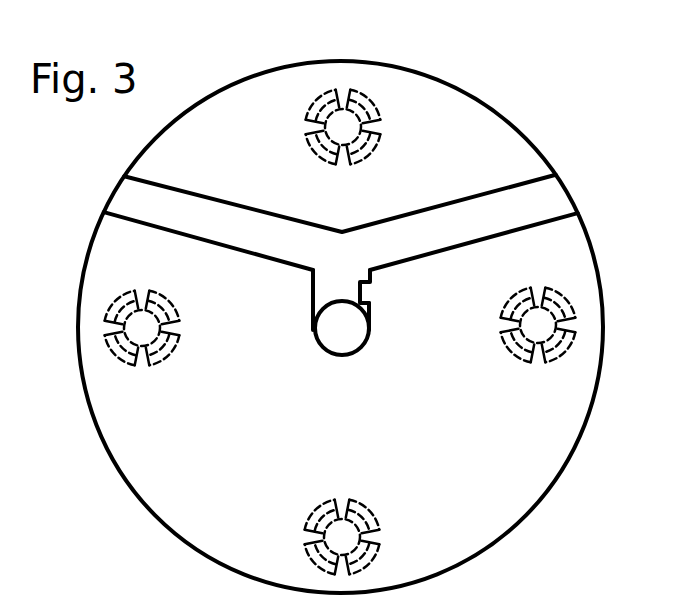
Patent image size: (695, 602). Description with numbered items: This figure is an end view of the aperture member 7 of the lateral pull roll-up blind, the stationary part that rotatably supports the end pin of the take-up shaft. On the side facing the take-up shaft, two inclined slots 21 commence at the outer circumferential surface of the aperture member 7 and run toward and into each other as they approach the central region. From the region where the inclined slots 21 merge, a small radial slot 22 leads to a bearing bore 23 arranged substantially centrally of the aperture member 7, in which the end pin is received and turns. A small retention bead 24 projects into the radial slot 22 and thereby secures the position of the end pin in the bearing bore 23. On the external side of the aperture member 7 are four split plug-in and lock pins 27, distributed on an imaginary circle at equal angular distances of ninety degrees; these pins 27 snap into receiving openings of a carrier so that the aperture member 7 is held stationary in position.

The aperture member 7 is at (563, 423).
The inclined slots 21 is at (217, 207).
The radial slot 22 is at (323, 290).
The bearing bore 23 is at (332, 340).
The retention bead 24 is at (365, 292).
The split plug-in and lock pins 27 is at (357, 103).